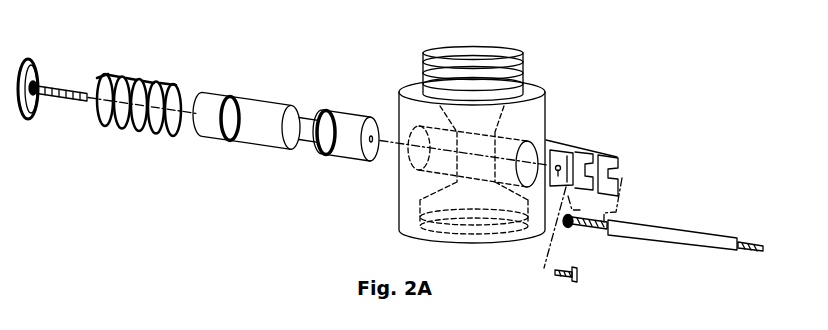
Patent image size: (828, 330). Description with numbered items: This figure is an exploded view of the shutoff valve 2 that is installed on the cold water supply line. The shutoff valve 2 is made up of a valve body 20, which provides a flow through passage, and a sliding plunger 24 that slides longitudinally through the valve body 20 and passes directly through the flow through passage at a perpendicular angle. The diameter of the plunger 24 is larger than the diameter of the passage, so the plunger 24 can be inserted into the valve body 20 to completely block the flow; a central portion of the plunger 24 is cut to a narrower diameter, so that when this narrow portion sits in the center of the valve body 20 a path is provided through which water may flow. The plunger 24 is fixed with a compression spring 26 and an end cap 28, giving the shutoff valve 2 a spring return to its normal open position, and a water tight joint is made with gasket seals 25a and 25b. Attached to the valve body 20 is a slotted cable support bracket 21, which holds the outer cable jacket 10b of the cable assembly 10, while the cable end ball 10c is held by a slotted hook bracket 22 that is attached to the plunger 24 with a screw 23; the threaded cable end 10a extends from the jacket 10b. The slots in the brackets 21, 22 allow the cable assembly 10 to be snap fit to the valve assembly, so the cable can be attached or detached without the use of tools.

The shutoff valve 2 is at (549, 77).
The cable assembly 10 is at (688, 234).
The threaded end of rod 10a is at (752, 251).
The outer cable jacket 10b is at (680, 237).
The cable end ball 10c is at (573, 228).
The valve body 20 is at (547, 101).
The slotted cable support bracket 21 is at (612, 158).
The slotted hook bracket 22 is at (577, 152).
The screw 23 is at (573, 282).
The sliding plunger 24 is at (286, 122).
The gasket seal 25a is at (228, 147).
The gasket seal 25b is at (333, 155).
The compression spring 26 is at (127, 78).
The end cap 28 is at (35, 62).